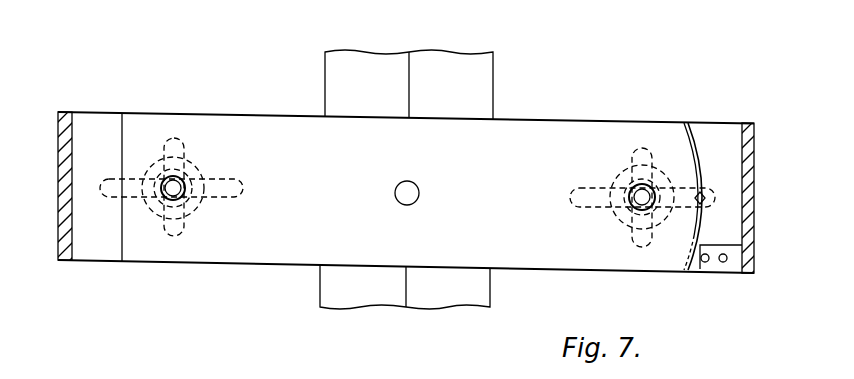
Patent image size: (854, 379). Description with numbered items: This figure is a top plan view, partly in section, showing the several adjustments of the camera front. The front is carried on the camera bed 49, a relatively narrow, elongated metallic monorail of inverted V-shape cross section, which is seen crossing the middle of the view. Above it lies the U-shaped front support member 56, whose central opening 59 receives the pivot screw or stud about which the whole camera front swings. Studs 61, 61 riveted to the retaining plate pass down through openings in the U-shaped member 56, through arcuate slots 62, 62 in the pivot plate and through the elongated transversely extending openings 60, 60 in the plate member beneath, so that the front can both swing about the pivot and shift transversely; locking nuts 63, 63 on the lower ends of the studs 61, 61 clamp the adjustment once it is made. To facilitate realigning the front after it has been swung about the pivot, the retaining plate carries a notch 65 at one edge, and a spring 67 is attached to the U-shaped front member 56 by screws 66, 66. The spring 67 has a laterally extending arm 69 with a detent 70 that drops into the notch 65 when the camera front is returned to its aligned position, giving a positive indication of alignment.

The camera bed 49 is at (489, 92).
The U-shaped front support member 56 is at (101, 114).
The central pivot hole 59 is at (407, 181).
The elongated transversely extending openings 60 is at (232, 194).
The studs 61 is at (164, 197).
The arcuate slots 62 is at (185, 232).
The locking nuts 63 is at (186, 183).
The notch 65 is at (698, 205).
The screws 66 is at (703, 262).
The spring 67 is at (713, 266).
The laterally extending arm 69 is at (701, 233).
The detent 70 is at (703, 196).